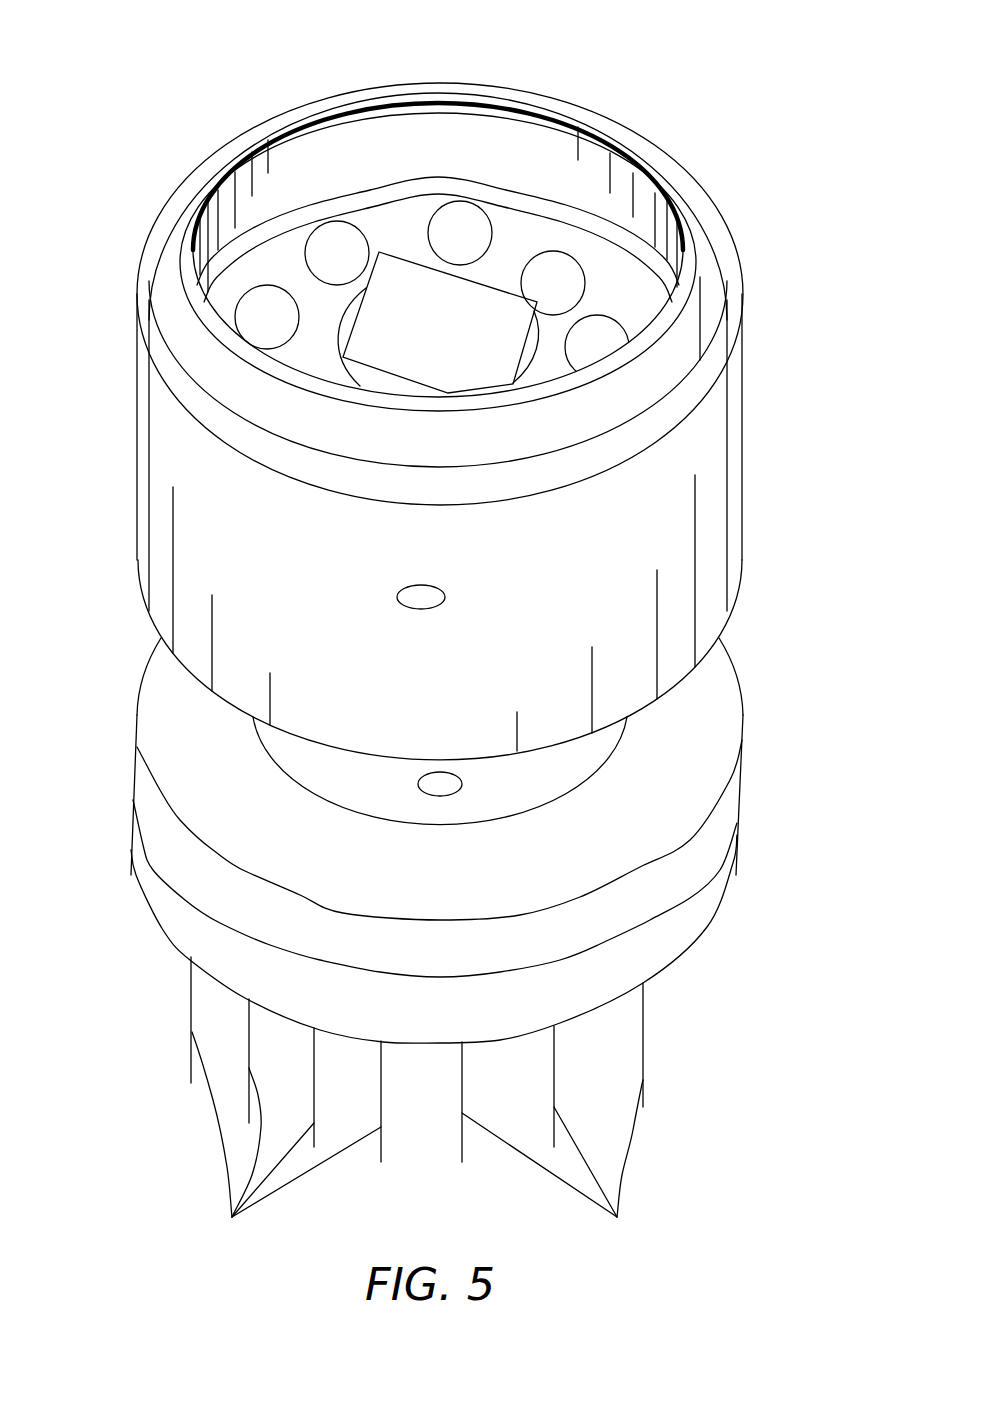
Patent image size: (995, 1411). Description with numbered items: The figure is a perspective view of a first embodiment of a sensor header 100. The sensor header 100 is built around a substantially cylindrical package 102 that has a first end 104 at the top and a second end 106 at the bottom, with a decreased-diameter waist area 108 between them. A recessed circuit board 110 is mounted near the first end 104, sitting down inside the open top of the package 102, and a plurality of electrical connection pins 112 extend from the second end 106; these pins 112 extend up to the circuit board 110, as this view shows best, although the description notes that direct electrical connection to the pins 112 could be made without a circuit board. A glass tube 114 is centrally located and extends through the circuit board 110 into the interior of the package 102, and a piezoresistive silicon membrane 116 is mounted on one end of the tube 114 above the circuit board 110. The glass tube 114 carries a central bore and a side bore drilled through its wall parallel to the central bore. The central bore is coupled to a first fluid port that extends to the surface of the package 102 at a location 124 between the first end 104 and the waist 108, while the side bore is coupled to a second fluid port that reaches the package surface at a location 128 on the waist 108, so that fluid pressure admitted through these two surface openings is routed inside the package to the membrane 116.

The sensor header 100 is at (758, 628).
The package 102 is at (743, 490).
The first end 104 is at (484, 96).
The second end 106 is at (708, 927).
The waist area 108 is at (623, 747).
The circuit board 110 is at (393, 208).
The electrical connection pins 112 is at (260, 307).
The glass tube 114 is at (518, 362).
The piezoresistive silicon membrane 116 is at (410, 340).
The location 124 is at (420, 597).
The location 128 is at (440, 783).